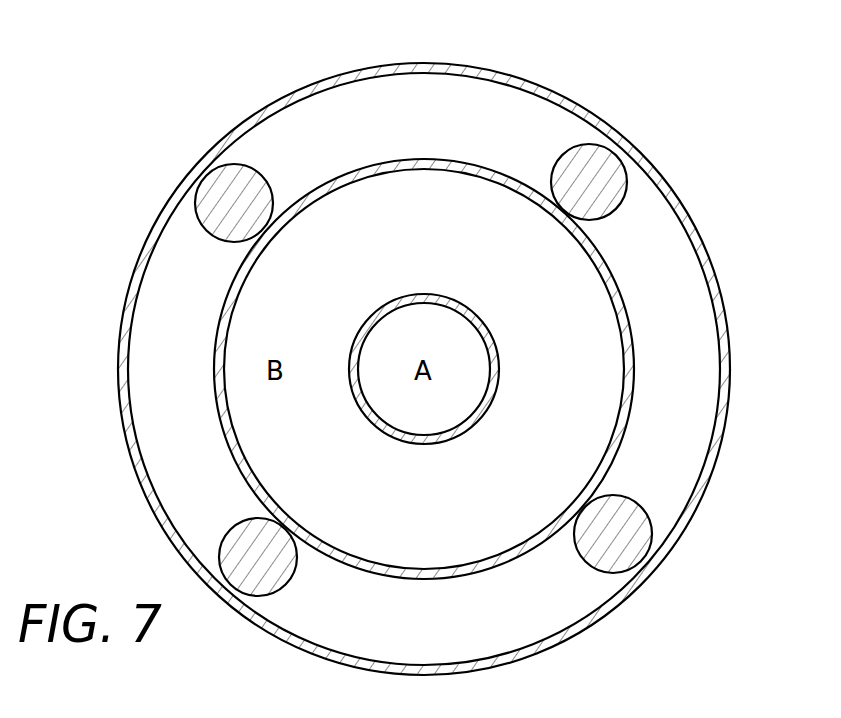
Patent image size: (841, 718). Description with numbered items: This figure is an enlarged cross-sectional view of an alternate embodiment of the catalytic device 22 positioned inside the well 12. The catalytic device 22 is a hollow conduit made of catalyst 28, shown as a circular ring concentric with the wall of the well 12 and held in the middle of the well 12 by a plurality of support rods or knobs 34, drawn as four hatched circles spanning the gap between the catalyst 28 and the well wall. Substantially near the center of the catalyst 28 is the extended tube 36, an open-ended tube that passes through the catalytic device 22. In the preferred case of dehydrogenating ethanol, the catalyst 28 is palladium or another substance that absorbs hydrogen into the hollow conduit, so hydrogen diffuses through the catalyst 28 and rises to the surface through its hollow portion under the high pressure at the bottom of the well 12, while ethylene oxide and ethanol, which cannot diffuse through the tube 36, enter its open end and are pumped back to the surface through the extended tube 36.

The well 12 is at (578, 110).
The catalytic device 22 is at (506, 306).
The catalyst 28 is at (613, 448).
The support rods or knobs 34 is at (637, 530).
The extended tube 36 is at (498, 355).